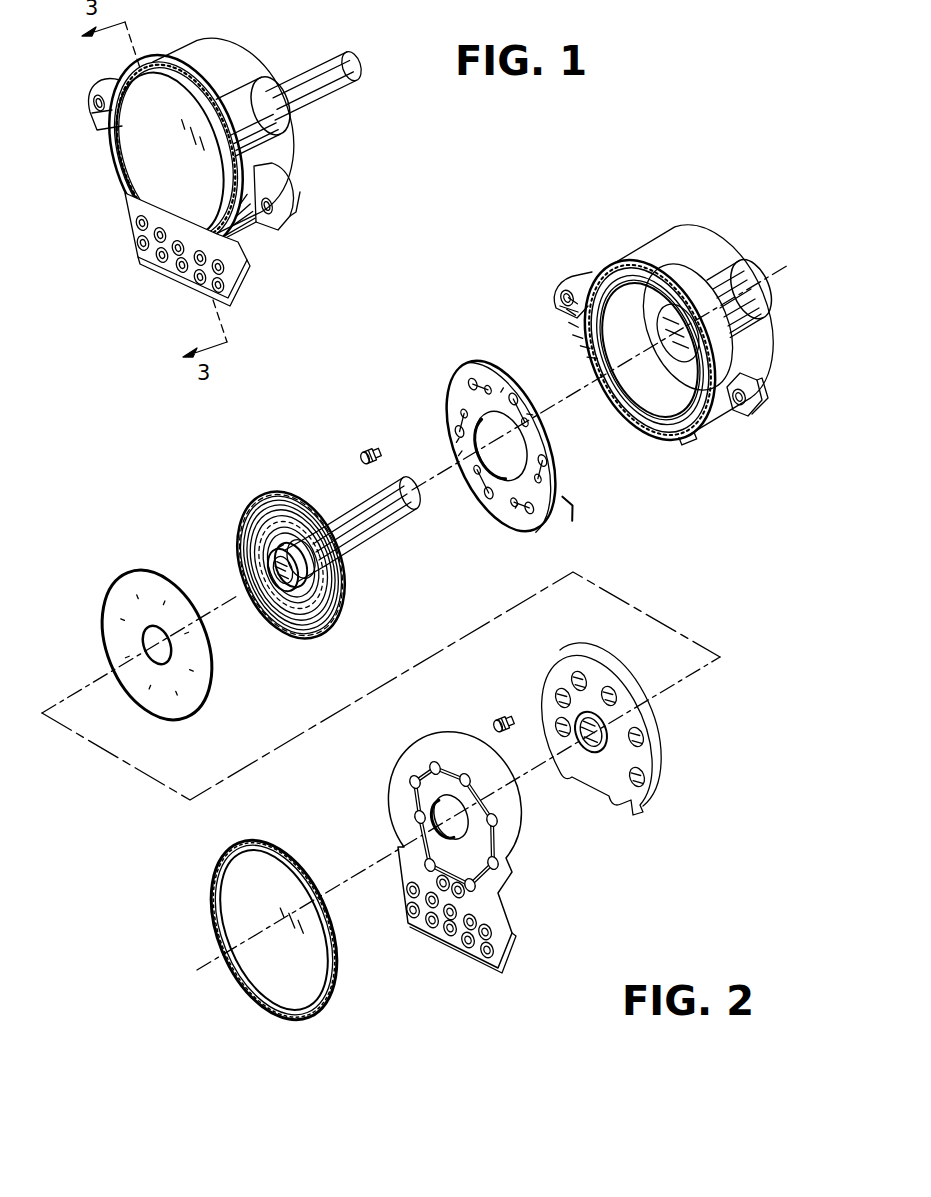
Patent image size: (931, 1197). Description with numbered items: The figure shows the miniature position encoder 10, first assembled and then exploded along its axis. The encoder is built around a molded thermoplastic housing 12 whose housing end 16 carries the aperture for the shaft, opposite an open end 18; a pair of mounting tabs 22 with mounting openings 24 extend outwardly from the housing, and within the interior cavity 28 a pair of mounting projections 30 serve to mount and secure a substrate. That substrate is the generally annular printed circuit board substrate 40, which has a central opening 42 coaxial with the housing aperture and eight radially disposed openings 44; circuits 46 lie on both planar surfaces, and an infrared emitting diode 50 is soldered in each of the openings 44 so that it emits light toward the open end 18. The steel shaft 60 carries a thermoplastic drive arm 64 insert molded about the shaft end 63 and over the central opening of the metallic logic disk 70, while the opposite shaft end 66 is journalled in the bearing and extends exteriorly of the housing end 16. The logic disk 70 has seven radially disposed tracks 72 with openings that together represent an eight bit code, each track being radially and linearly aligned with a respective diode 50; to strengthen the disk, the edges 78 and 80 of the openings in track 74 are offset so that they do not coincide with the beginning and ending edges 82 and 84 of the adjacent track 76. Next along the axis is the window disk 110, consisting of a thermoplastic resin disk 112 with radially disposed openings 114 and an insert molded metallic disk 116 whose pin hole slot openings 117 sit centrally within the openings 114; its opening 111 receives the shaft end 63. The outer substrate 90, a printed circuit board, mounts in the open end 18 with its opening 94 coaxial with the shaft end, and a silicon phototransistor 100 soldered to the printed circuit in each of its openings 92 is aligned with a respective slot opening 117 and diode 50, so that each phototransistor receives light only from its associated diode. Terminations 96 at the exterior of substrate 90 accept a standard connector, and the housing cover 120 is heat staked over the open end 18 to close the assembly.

In FIG. 1, the miniature position encoder 10 is at (372, 168).
In FIG. 1, the housing 12 is at (205, 56).
In FIG. 1, the housing end 16 is at (300, 122).
In FIG. 2, the housing end 16 is at (742, 262).
In FIG. 1, the open end 18 is at (163, 112).
In FIG. 2, the open end 18 is at (704, 374).
In FIG. 1, the mounting tabs 22 is at (294, 224).
In FIG. 2, the mounting tabs 22 is at (750, 414).
In FIG. 1, the mounting openings 24 is at (96, 116).
In FIG. 2, the mounting openings 24 is at (554, 308).
In FIG. 2, the interior cavity 28 is at (664, 396).
In FIG. 2, the mounting projections 30 is at (596, 288).
In FIG. 2, the printed circuit board substrate 40 is at (562, 480).
In FIG. 2, the central opening 42 is at (501, 446).
In FIG. 2, the radially disposed openings 44 is at (478, 384).
In FIG. 2, the circuits 46 is at (452, 416).
In FIG. 2, the infrared emitting diodes 50 is at (366, 450).
In FIG. 1, the steel shaft 60 is at (306, 66).
In FIG. 2, the steel shaft 60 is at (404, 514).
In FIG. 2, the shaft end 63 is at (287, 578).
In FIG. 2, the drive arm 64 is at (346, 540).
In FIG. 1, the shaft end 66 is at (352, 64).
In FIG. 2, the metallic logic disk 70 is at (345, 615).
In FIG. 2, the tracks 72 is at (289, 497).
In FIG. 2, the track 74 is at (249, 518).
In FIG. 2, the track 76 is at (242, 548).
In FIG. 2, the edge 78 is at (243, 538).
In FIG. 2, the edge 80 is at (252, 508).
In FIG. 2, the edge 82 is at (246, 527).
In FIG. 2, the edge 84 is at (248, 566).
In FIG. 1, the outer substrate 90 is at (135, 248).
In FIG. 2, the outer substrate 90 is at (516, 926).
In FIG. 2, the openings 92 is at (502, 838).
In FIG. 2, the printed circuit 94 is at (434, 812).
In FIG. 1, the terminations 96 is at (180, 270).
In FIG. 2, the terminations 96 is at (487, 958).
In FIG. 2, the silicon phototransistor 100 is at (500, 716).
In FIG. 2, the window disk 110 is at (650, 722).
In FIG. 2, the opening 111 is at (580, 742).
In FIG. 2, the thermoplastic resin disk 112 is at (656, 746).
In FIG. 2, the radially disposed openings 114 is at (608, 690).
In FIG. 2, the metallic disk 116 is at (108, 582).
In FIG. 2, the slot openings 117 is at (124, 612).
In FIG. 1, the housing cover 120 is at (136, 160).
In FIG. 2, the housing cover 120 is at (240, 892).